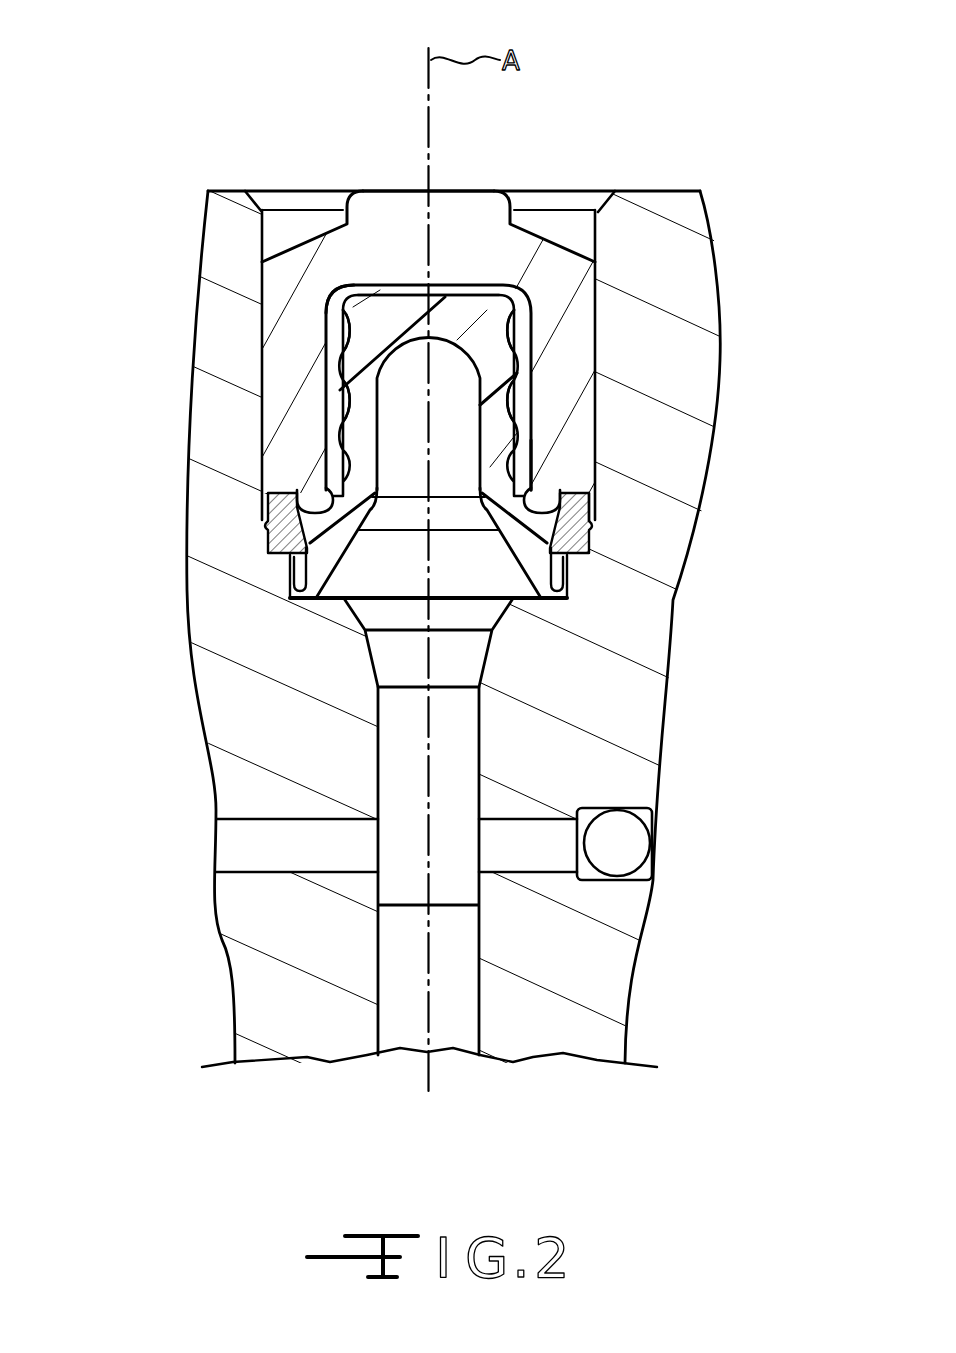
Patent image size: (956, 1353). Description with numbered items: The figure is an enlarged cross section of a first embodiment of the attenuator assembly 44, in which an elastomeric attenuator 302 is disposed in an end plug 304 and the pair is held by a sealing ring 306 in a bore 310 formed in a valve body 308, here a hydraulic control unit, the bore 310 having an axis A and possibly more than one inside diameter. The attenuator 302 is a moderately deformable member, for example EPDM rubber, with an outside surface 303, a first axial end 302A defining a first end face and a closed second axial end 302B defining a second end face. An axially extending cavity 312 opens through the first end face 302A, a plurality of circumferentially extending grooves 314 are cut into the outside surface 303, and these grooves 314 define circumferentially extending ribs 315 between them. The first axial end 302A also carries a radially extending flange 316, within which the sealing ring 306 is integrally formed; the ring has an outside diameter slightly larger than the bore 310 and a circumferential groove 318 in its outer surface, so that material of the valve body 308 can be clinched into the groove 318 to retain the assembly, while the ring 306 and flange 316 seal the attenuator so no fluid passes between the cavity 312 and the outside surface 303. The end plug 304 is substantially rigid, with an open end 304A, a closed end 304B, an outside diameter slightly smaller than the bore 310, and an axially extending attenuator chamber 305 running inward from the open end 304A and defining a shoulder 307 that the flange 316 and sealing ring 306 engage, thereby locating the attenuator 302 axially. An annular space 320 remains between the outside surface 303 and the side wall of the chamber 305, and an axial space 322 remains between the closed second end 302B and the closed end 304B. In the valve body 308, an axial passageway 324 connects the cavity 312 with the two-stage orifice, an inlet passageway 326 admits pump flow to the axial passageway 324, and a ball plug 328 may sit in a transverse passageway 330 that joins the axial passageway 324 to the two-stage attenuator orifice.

The attenuator assembly 44 is at (188, 80).
The attenuator 302 is at (540, 363).
The first axial end 302A is at (556, 603).
The second axial end 302B is at (373, 300).
The outside surface 303 is at (327, 490).
The end plug 304 is at (556, 232).
The open end 304A is at (270, 508).
The closed end 304B is at (472, 191).
The attenuator chamber 305 is at (523, 340).
The sealing ring 306 is at (605, 497).
The shoulder 307 is at (567, 462).
The valve body 308 is at (640, 740).
The bore 310 is at (272, 292).
The cavity 312 is at (407, 440).
The grooves 314 is at (336, 418).
The ribs 315 is at (340, 372).
The flange 316 is at (575, 594).
The groove 318 is at (582, 521).
The annular space 320 is at (527, 417).
The axial space 322 is at (357, 287).
The axial passageway 324 is at (378, 782).
The inlet passageway 326 is at (250, 870).
The ball plug 328 is at (633, 833).
The transverse passageway 330 is at (515, 872).